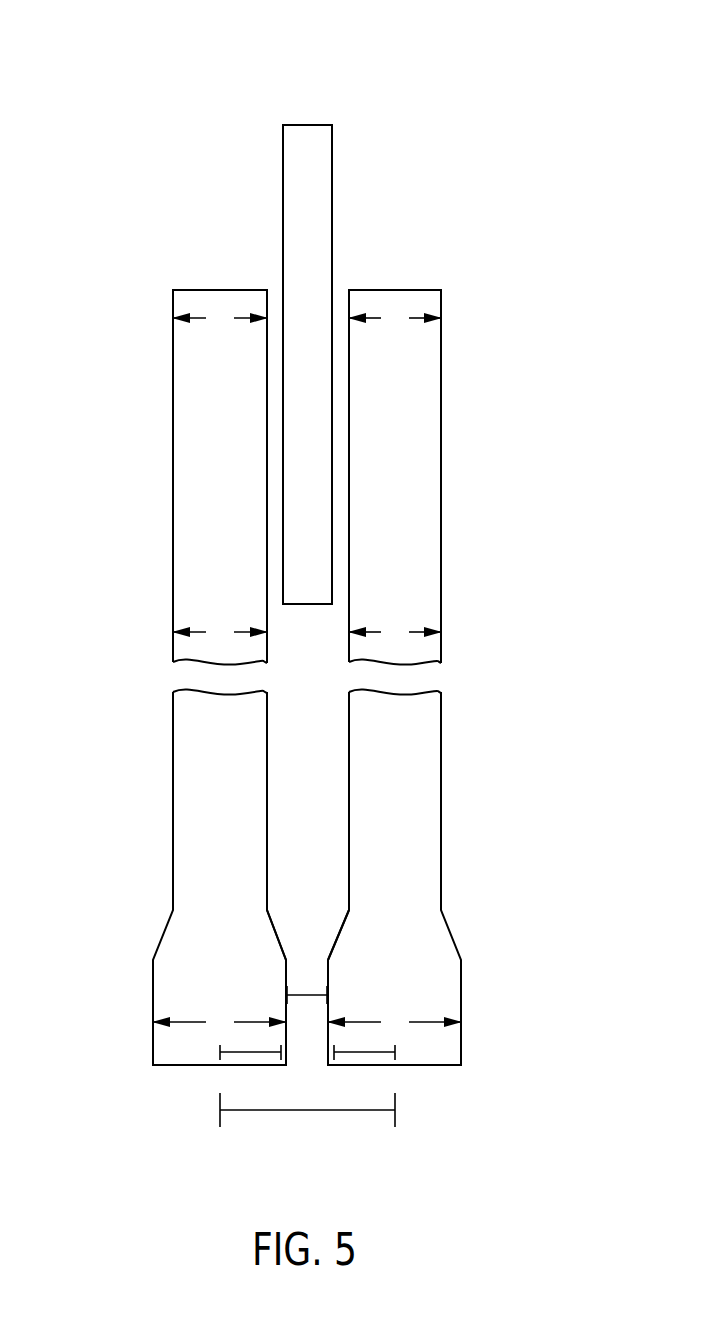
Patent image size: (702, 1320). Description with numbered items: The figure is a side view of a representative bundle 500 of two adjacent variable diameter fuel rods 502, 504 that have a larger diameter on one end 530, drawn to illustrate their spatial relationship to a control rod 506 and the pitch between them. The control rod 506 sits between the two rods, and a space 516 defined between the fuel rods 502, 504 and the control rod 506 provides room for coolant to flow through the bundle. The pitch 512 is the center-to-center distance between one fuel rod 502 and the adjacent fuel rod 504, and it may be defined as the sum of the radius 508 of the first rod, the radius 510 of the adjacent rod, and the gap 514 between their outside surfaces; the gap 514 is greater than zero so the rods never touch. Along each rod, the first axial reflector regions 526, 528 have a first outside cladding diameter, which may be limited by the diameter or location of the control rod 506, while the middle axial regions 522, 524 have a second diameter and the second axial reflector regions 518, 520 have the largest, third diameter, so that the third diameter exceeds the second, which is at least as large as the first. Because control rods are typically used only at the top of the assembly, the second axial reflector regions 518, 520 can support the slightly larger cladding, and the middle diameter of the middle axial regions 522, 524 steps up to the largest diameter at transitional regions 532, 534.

The bundle 500 is at (375, 114).
The fuel rod 502 is at (185, 350).
The adjacent fuel rod 504 is at (425, 350).
The control rod 506 is at (296, 159).
The radius 508 is at (250, 1052).
The radius 510 is at (367, 1052).
The pitch 512 is at (309, 1110).
The gap 514 is at (308, 987).
The space 516 is at (301, 835).
The second axial reflector region 518 is at (136, 1005).
The second axial reflector region 520 is at (477, 1005).
The middle axial region 522 is at (148, 630).
The middle axial region 524 is at (467, 630).
The first axial reflector region 526 is at (162, 427).
The first axial reflector region 528 is at (453, 427).
The end 530 is at (307, 939).
The transitional region 532 is at (168, 877).
The transitional region 534 is at (446, 877).